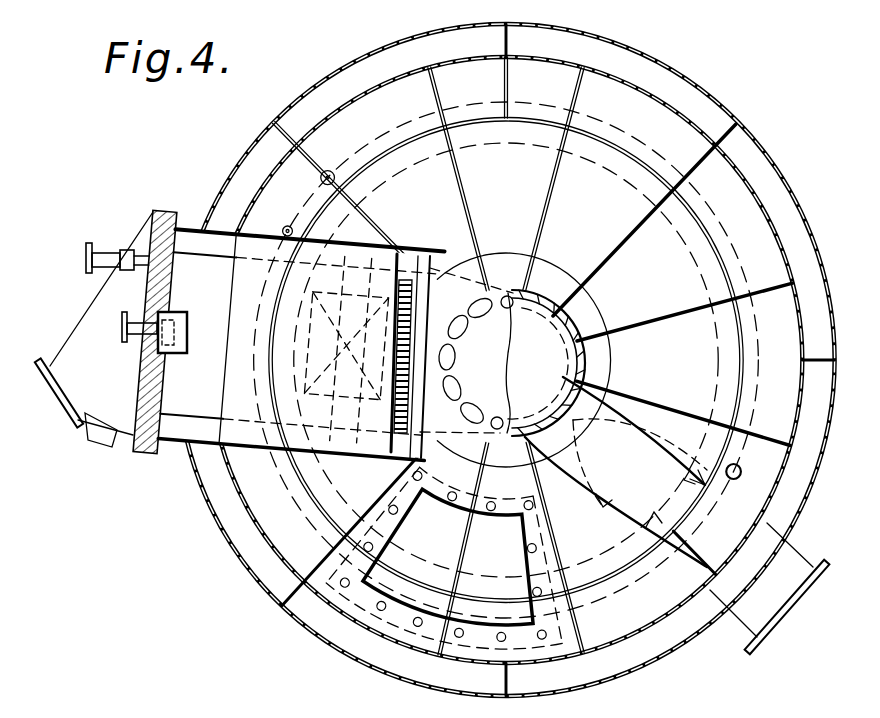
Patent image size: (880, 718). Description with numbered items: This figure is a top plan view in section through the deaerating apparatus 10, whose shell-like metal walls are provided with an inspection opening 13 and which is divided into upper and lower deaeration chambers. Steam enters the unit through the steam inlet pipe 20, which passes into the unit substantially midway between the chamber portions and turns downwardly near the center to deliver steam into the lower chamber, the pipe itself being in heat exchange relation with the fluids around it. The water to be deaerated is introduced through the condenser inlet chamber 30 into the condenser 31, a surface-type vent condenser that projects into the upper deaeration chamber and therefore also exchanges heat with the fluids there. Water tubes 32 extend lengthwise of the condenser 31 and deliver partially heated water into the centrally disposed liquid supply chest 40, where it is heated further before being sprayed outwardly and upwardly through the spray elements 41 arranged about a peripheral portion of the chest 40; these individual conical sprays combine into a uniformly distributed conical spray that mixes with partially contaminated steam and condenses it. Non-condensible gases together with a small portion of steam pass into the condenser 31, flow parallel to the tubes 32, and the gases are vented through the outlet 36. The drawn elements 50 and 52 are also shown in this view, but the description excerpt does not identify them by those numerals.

The deaerating apparatus 10 is at (634, 473).
The inspection opening 13 is at (392, 612).
The steam inlet pipe 20 is at (800, 559).
The condenser inlet chamber 30 is at (70, 343).
The condenser 31 is at (212, 291).
The water tubes 32 is at (410, 262).
The gas outlet 36 is at (143, 318).
The liquid supply chest 40 is at (583, 350).
The spray elements 41 is at (475, 362).
The radial struts 50 is at (620, 247).
The guide rail 52 is at (633, 138).